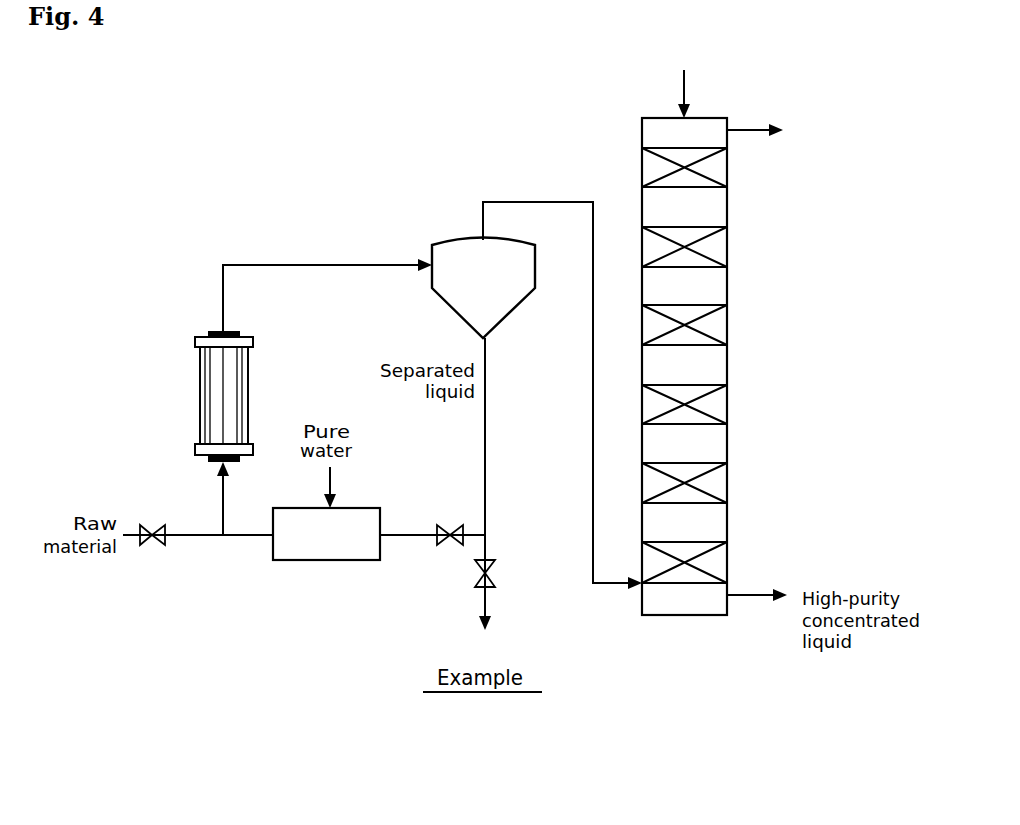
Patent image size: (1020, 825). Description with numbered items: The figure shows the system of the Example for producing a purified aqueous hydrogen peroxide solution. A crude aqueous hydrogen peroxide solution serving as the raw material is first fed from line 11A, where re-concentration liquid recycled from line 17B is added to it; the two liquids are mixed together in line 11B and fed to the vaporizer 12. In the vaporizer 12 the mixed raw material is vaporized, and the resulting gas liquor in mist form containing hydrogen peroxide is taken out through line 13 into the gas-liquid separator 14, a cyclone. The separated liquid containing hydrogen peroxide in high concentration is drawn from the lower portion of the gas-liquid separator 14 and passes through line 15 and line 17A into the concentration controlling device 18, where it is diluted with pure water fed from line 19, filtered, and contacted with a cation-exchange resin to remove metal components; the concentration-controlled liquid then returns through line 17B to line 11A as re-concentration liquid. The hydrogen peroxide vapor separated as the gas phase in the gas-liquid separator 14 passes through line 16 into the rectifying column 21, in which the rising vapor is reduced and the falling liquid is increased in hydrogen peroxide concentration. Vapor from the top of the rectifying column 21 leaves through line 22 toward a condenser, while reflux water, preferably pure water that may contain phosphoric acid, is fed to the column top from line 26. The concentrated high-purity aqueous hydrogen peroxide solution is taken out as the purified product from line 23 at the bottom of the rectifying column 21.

The line 11A is at (190, 537).
The line 11B is at (223, 503).
The vaporizer 12 is at (253, 340).
The line 13 is at (343, 265).
The gas-liquid separator 14 is at (450, 240).
The line 15 is at (487, 442).
The line 16 is at (545, 202).
The line 17A is at (403, 534).
The line 17B is at (248, 537).
The concentration controlling device 18 is at (325, 562).
The line 19 is at (333, 482).
The rectifying column 21 is at (727, 367).
The line 22 is at (755, 130).
The line 23 is at (762, 595).
The line 26 is at (684, 105).